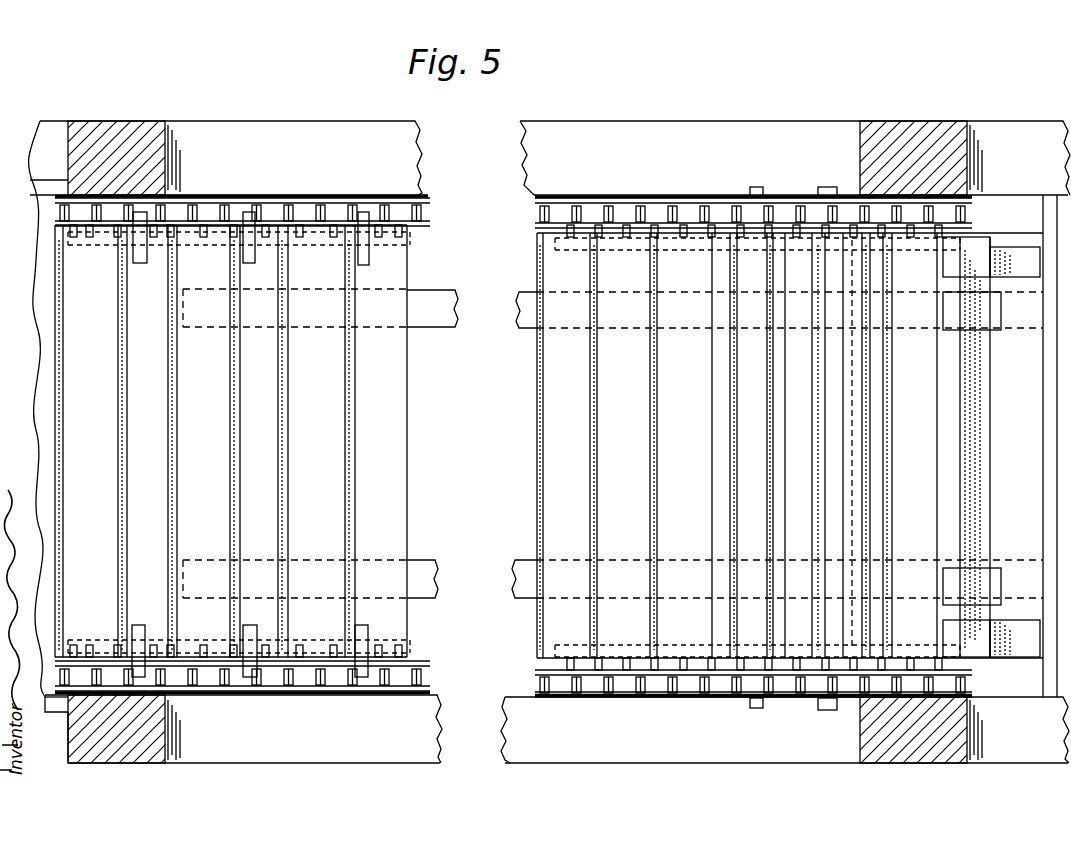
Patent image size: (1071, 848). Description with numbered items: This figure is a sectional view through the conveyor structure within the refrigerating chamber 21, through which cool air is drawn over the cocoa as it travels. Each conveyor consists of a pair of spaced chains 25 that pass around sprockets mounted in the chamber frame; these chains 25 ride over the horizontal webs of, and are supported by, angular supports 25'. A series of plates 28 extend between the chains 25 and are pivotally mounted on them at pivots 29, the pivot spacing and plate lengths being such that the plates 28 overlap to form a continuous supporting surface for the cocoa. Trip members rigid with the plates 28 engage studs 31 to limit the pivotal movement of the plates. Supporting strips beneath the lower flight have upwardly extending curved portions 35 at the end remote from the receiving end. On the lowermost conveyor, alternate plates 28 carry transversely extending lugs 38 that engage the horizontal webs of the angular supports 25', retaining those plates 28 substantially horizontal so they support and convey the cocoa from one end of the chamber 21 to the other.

The refrigerating chamber 21 is at (327, 128).
The chains 25 is at (513, 433).
The angular supports 25' is at (513, 443).
The plates 28 is at (549, 441).
The pivots 29 is at (178, 230).
The studs 31 is at (318, 246).
The upwardly extending curved portions 35 is at (998, 340).
The transversely extending lugs 38 is at (140, 263).